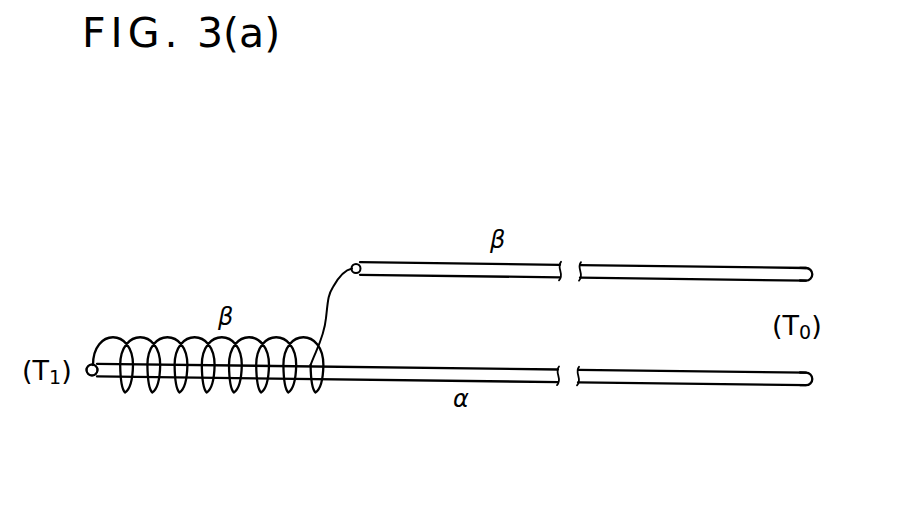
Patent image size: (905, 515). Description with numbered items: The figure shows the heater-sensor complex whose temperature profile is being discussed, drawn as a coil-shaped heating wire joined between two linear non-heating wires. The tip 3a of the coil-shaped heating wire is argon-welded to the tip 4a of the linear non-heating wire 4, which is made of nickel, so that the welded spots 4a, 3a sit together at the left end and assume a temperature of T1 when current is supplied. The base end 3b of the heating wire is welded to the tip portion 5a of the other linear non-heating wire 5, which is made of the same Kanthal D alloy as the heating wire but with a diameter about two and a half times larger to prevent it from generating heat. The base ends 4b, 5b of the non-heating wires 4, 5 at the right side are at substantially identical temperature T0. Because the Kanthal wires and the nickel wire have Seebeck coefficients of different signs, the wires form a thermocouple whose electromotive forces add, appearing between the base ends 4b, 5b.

The tip of the heating wire 3a is at (89, 364).
The base end of the heating wire 3b is at (352, 272).
The linear non-heating wire 4 is at (650, 385).
The tip of the non-heating wire 4a is at (91, 376).
The base end of the non-heating wire 4b is at (811, 383).
The linear non-heating wire 5 is at (660, 263).
The tip portion of the non-heating wire 5a is at (353, 264).
The base end of the non-heating wire 5b is at (812, 267).